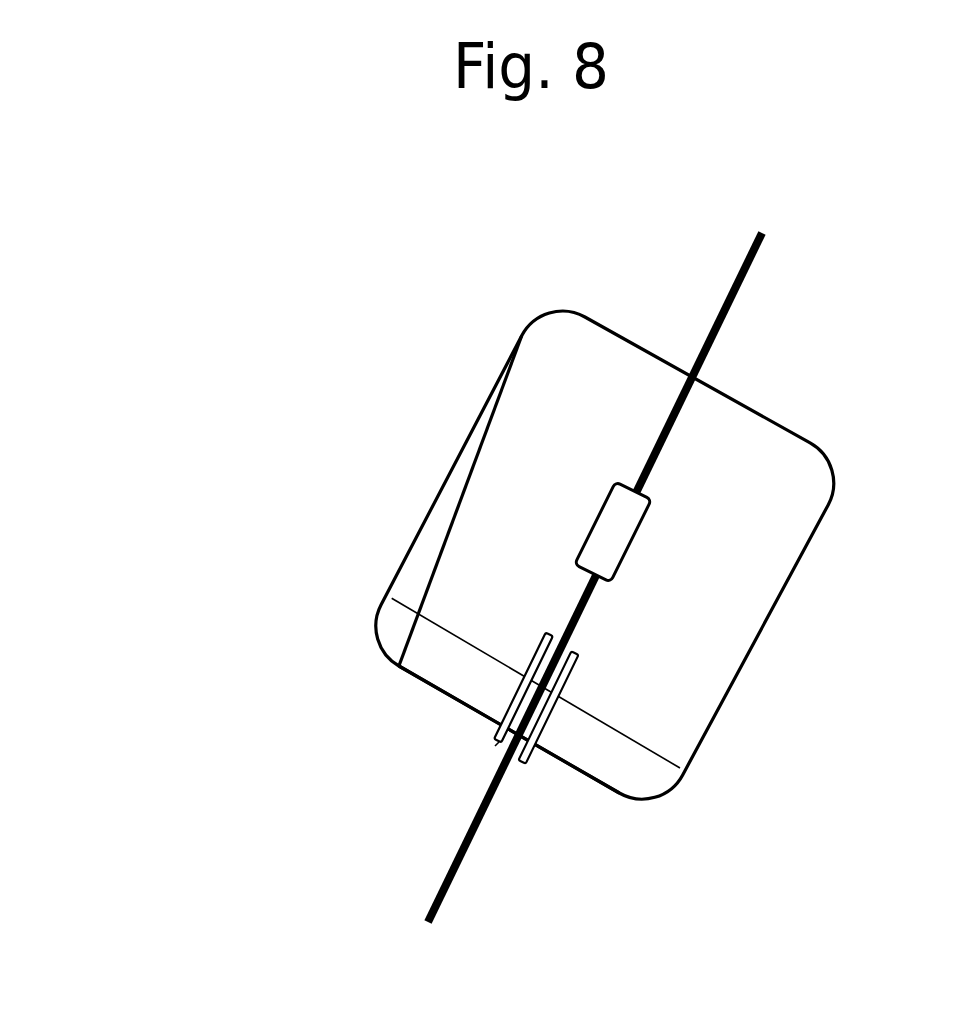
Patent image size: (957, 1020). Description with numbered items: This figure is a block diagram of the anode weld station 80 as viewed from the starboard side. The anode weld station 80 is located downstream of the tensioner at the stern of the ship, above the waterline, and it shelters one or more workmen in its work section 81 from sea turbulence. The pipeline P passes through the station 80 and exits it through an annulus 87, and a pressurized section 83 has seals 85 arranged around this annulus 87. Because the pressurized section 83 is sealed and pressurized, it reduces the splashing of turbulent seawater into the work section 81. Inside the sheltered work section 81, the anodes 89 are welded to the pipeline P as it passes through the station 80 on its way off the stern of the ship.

The anode weld station 80 is at (740, 397).
The work section 81 is at (471, 420).
The pressurized section 83 is at (422, 683).
The seals 85 is at (514, 733).
The annulus 87 is at (497, 740).
The anodes 89 is at (650, 515).
The pipeline P is at (447, 876).